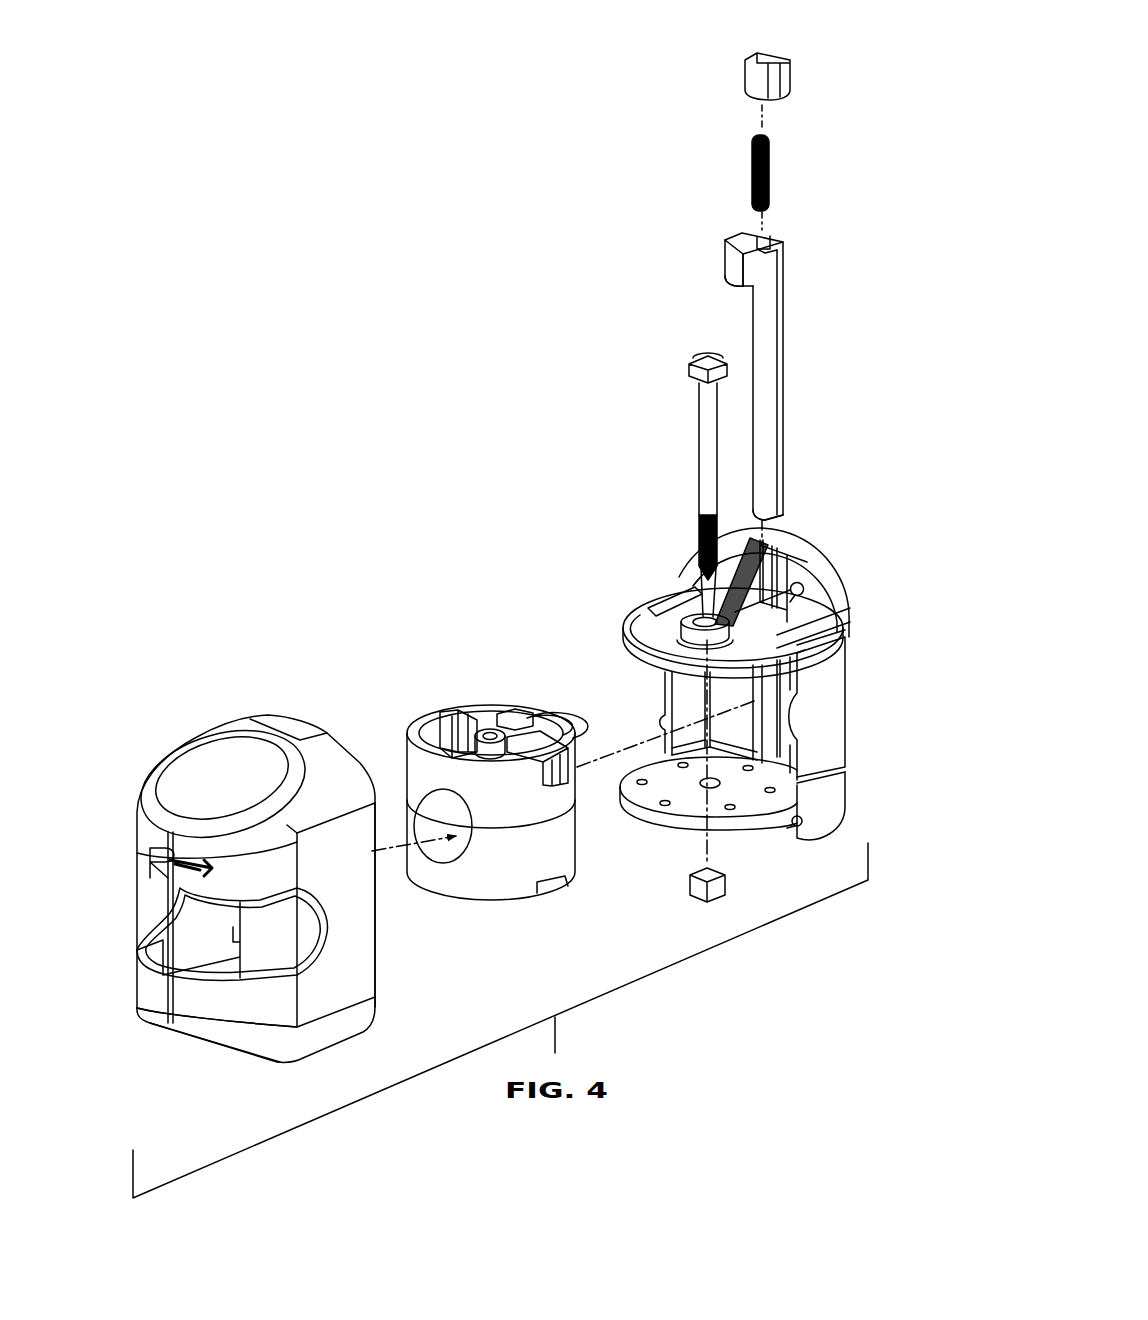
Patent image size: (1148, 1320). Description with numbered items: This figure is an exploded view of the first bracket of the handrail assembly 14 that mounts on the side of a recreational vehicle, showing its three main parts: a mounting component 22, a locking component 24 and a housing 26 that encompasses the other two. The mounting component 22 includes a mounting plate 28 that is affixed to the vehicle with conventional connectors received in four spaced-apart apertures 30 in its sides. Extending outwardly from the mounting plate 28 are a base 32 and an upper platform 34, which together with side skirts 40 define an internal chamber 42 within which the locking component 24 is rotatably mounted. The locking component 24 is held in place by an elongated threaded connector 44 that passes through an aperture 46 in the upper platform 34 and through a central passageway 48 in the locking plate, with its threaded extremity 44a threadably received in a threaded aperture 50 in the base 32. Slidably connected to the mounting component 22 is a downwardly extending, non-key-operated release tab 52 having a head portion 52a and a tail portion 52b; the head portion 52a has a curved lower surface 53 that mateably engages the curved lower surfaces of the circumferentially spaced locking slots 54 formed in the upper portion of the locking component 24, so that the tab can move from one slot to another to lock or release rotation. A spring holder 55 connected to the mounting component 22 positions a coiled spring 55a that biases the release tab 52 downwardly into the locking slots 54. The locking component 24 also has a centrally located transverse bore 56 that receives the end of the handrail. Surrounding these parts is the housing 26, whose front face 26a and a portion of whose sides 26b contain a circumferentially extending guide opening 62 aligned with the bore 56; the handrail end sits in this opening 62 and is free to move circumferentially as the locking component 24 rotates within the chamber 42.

The handrail assembly 14 is at (341, 484).
The mounting component 22 is at (741, 711).
The locking component 24 is at (520, 895).
The housing 26 is at (216, 742).
The front face 26a is at (229, 1008).
The sides 26b is at (345, 971).
The mounting plate 28 is at (838, 574).
The apertures 30 is at (700, 584).
The base 32 is at (727, 852).
The upper platform 34 is at (622, 648).
The side skirts 40 is at (825, 712).
The internal chamber 42 is at (700, 708).
The elongated threaded connector 44 is at (699, 408).
The threaded extremity 44a is at (700, 545).
The aperture 46 is at (652, 612).
The central passageway 48 is at (489, 722).
The threaded aperture 50 is at (698, 788).
The release tab 52 is at (785, 358).
The head portion 52a is at (724, 256).
The tail portion 52b is at (784, 492).
The curved lower surface 53 is at (740, 290).
The locking slots 54 is at (430, 713).
The spring holder 55 is at (795, 76).
The coiled spring 55a is at (771, 165).
The transverse bore 56 is at (462, 847).
The guide opening 62 is at (140, 916).